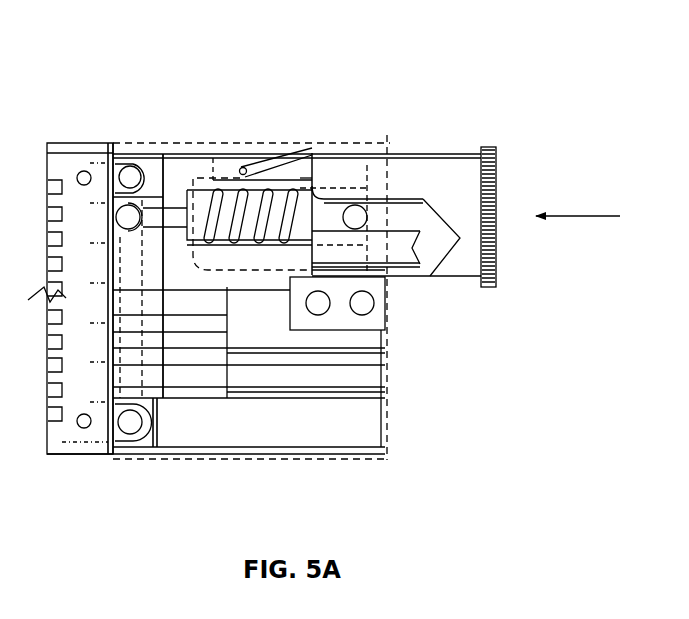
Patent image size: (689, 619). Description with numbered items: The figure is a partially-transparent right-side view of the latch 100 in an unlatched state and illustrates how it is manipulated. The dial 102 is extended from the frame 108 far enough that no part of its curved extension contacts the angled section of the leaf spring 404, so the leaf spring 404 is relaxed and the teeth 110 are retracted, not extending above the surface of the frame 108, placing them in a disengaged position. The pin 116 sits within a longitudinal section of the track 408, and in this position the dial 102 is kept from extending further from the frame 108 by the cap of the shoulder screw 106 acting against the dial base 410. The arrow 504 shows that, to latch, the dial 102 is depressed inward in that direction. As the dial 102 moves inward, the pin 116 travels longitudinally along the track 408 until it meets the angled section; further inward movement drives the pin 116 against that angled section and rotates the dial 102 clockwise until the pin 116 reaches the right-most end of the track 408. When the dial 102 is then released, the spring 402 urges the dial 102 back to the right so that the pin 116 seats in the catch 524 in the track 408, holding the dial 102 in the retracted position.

The latch 100 is at (450, 50).
The dial 102 is at (488, 288).
The shoulder screw 106 is at (177, 205).
The frame 108 is at (337, 415).
The teeth 110 is at (247, 168).
The pin 116 is at (355, 220).
The spring 402 is at (243, 168).
The leaf spring 404 is at (300, 153).
The track 408 is at (423, 217).
The dial base 410 is at (313, 185).
The arrow 504 is at (583, 217).
The catch 524 is at (413, 247).